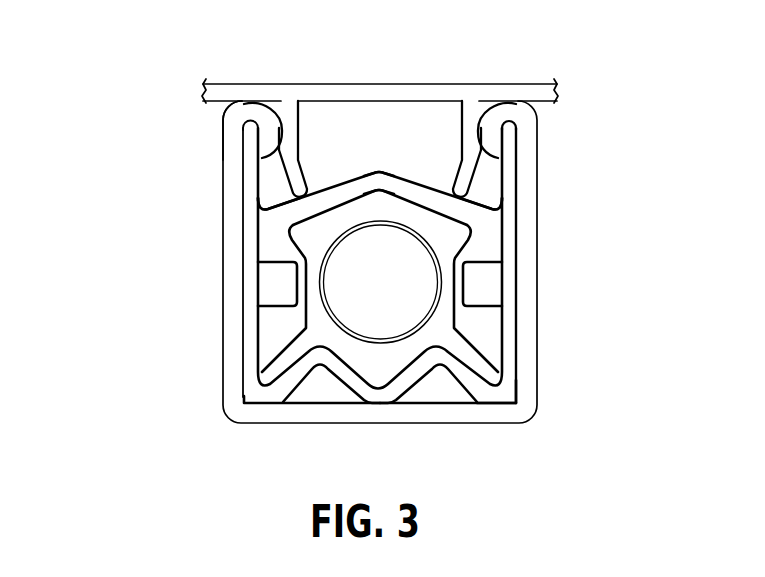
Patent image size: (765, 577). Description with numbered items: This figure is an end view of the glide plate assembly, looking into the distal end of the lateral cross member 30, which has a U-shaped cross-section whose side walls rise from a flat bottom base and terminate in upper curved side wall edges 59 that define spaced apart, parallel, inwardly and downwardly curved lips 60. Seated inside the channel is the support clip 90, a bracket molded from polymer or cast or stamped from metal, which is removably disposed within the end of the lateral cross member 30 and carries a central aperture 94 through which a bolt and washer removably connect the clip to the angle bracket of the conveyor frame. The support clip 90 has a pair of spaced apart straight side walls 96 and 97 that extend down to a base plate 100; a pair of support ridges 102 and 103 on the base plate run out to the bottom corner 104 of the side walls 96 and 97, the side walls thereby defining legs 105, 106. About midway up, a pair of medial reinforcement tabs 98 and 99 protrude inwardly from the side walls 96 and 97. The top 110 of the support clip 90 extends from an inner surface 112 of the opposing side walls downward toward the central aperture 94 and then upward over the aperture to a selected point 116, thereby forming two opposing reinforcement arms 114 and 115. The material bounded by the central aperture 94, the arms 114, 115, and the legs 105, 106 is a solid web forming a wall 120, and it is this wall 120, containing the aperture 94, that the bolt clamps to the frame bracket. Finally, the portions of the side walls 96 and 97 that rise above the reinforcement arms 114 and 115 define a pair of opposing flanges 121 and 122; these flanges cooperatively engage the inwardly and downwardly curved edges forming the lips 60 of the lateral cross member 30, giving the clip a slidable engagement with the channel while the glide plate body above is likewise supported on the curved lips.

The lateral cross member 30 is at (228, 316).
The upper curved side wall edge 59 is at (250, 156).
The lip 60 is at (258, 137).
The support clip 90 is at (528, 338).
The central aperture 94 is at (391, 287).
The side wall 96 is at (228, 232).
The side wall 97 is at (530, 235).
The medial reinforcement tab 98 is at (260, 284).
The medial reinforcement tab 99 is at (502, 283).
The base plate 100 is at (474, 402).
The support ridge 102 is at (307, 400).
The support ridge 103 is at (440, 400).
The bottom corner 104 is at (244, 398).
The leg 105 is at (270, 357).
The leg 106 is at (494, 357).
The top 110 is at (337, 182).
The inner surface 112 is at (476, 226).
The reinforcement arm 114 is at (506, 197).
The reinforcement arm 115 is at (278, 201).
The selected point 116 is at (400, 188).
The wall 120 is at (395, 215).
The flange 121 is at (510, 127).
The flange 122 is at (266, 128).